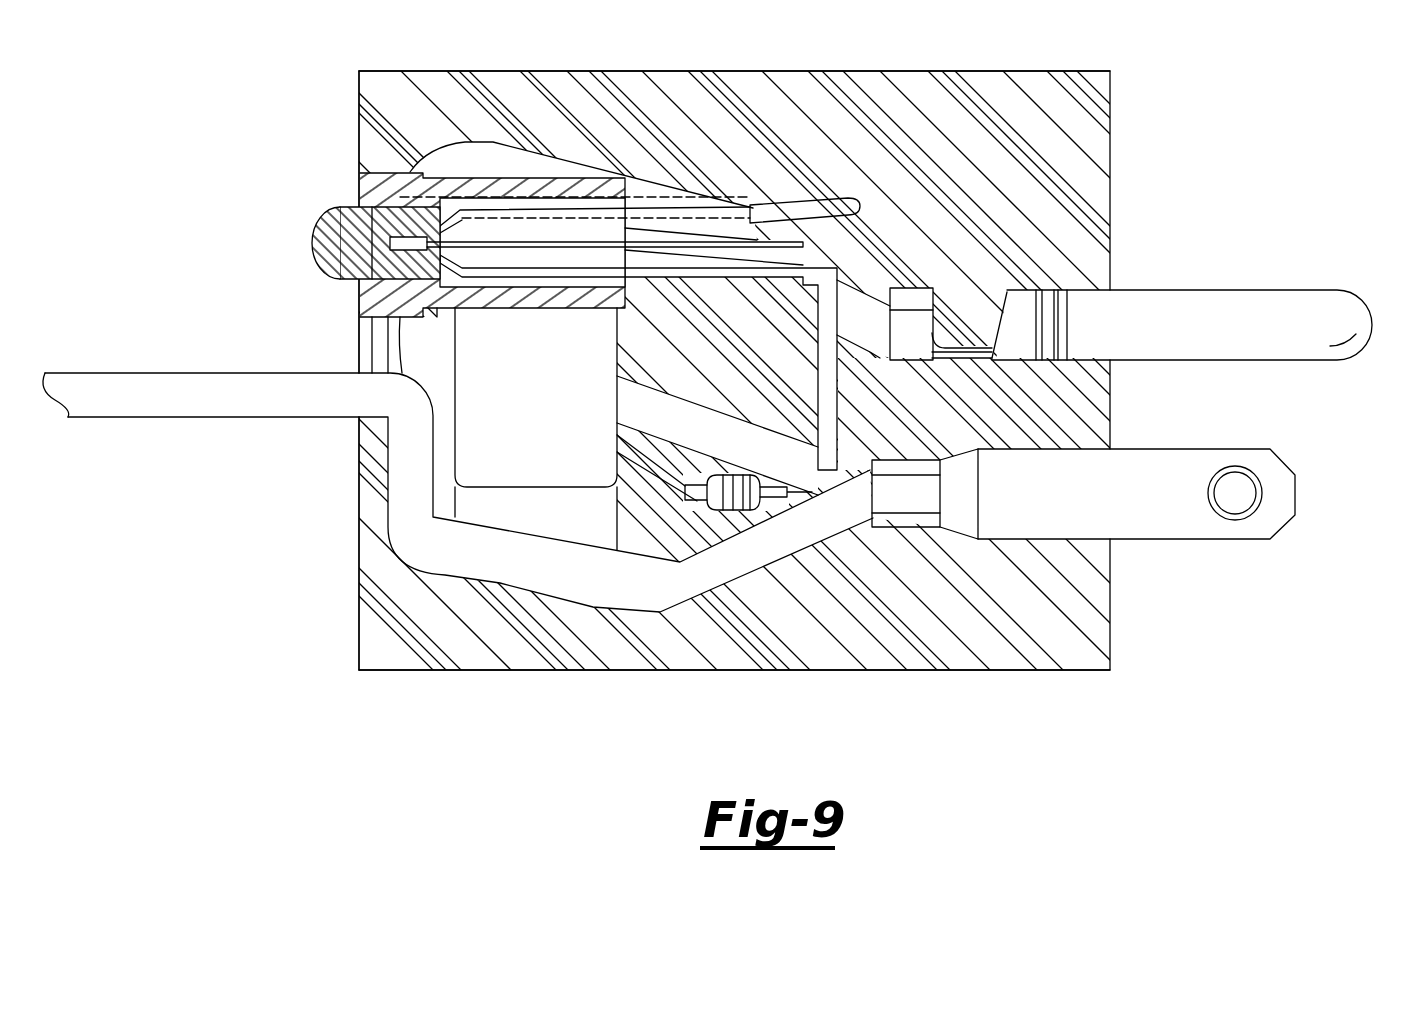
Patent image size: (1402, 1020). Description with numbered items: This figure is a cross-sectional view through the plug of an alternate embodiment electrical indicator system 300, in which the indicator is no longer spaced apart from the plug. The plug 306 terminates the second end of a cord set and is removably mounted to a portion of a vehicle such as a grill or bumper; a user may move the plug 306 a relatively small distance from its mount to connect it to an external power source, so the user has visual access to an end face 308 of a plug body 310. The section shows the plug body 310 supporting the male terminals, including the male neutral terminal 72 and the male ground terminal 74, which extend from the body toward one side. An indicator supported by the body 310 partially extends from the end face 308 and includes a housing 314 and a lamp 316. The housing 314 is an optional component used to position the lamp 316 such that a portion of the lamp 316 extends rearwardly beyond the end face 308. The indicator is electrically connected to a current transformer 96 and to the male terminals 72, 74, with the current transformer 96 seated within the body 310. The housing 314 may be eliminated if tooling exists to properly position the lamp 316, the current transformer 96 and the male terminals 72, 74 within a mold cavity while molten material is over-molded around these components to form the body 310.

The electrical indicator system 300 is at (228, 138).
The plug 306 is at (1077, 677).
The end face 308 is at (355, 650).
The plug body 310 is at (958, 672).
The housing 314 is at (512, 190).
The lamp 316 is at (340, 240).
The current transformer 96 is at (537, 510).
The male neutral terminal 72 is at (1297, 498).
The male ground terminal 74 is at (1280, 305).